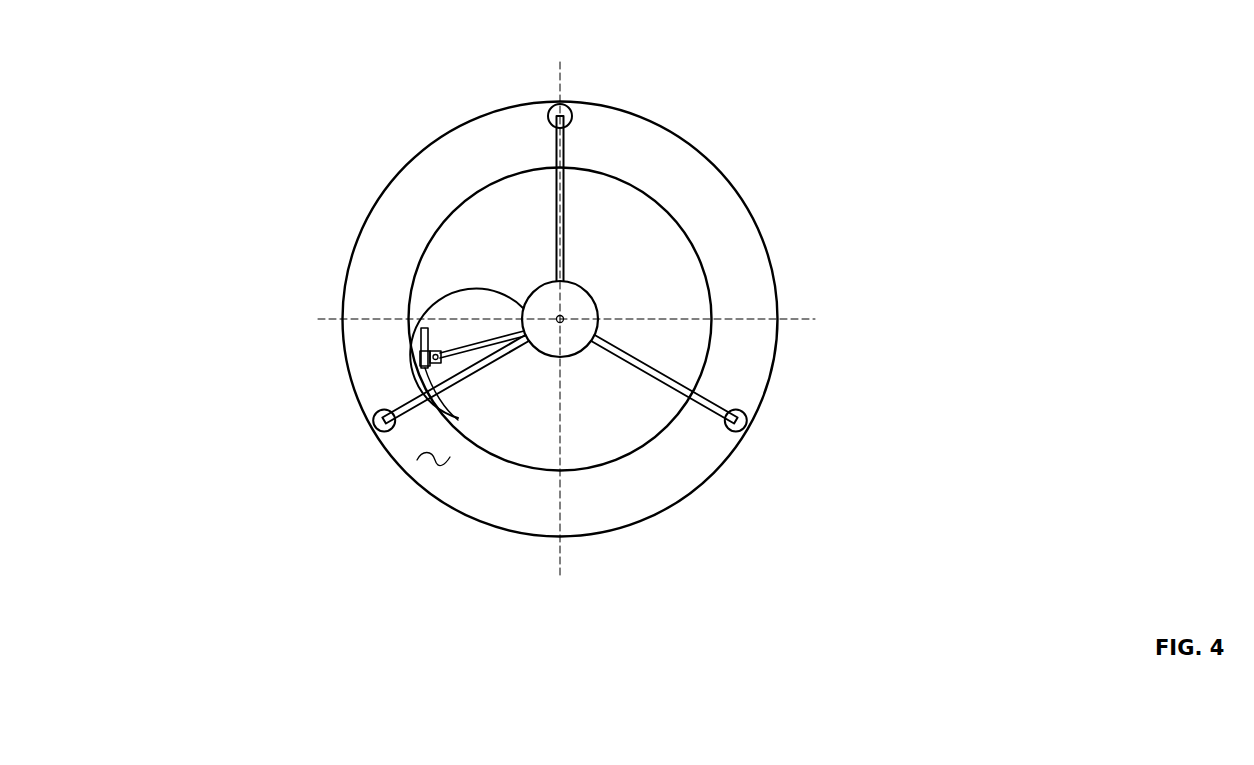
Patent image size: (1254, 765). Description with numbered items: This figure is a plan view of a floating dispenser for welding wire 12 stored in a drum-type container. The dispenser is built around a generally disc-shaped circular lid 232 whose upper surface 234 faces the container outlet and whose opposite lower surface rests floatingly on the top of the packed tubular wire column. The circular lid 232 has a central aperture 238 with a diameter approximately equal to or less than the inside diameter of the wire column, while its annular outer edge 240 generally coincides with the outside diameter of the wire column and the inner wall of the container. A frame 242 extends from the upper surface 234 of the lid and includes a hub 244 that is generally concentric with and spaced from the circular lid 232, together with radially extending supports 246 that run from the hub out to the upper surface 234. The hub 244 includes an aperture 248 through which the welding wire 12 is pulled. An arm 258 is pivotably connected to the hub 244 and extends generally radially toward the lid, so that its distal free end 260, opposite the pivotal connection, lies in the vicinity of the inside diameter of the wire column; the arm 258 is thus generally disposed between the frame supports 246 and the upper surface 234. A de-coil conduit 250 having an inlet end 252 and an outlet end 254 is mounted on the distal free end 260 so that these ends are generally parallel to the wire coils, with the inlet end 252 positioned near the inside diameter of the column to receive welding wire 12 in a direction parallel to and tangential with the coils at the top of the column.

The welding wire 12 is at (497, 283).
The circular lid 232 is at (348, 368).
The upper surface 234 is at (433, 470).
The central aperture 238 is at (627, 185).
The annular outer edge 240 is at (782, 332).
The frame 242 is at (472, 380).
The hub 244 is at (582, 283).
The radially extending supports 246 is at (542, 213).
The aperture 248 is at (563, 317).
The de-coil conduit 250 is at (423, 343).
The inlet end 252 is at (425, 368).
The outlet end 254 is at (423, 327).
The arm 258 is at (498, 340).
The distal free end 260 is at (436, 351).